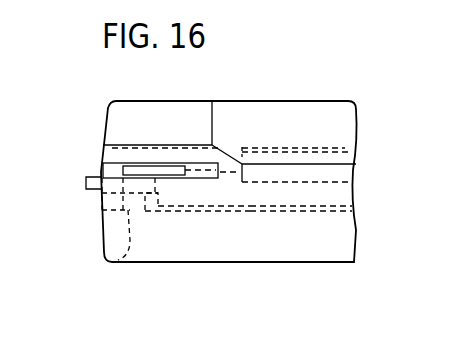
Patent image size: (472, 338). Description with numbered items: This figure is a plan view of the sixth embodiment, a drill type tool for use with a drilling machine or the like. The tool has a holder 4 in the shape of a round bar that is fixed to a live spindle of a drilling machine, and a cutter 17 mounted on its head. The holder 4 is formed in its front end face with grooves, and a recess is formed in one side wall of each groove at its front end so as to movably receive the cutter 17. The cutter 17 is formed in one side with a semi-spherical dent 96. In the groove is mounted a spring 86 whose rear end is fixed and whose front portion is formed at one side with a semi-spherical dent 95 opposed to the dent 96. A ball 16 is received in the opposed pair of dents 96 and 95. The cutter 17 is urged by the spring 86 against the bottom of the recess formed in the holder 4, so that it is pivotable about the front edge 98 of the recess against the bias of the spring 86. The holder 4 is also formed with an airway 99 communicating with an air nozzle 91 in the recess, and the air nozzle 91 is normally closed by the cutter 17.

The holder 4 is at (280, 113).
The ball 16 is at (104, 171).
The cutter 17 is at (86, 181).
The spring 86 is at (138, 163).
The air nozzle 91 is at (162, 210).
The semi-spherical dent 95 is at (112, 163).
The semi-spherical dent 96 is at (103, 213).
The front edge 98 is at (99, 194).
The airway 99 is at (247, 213).